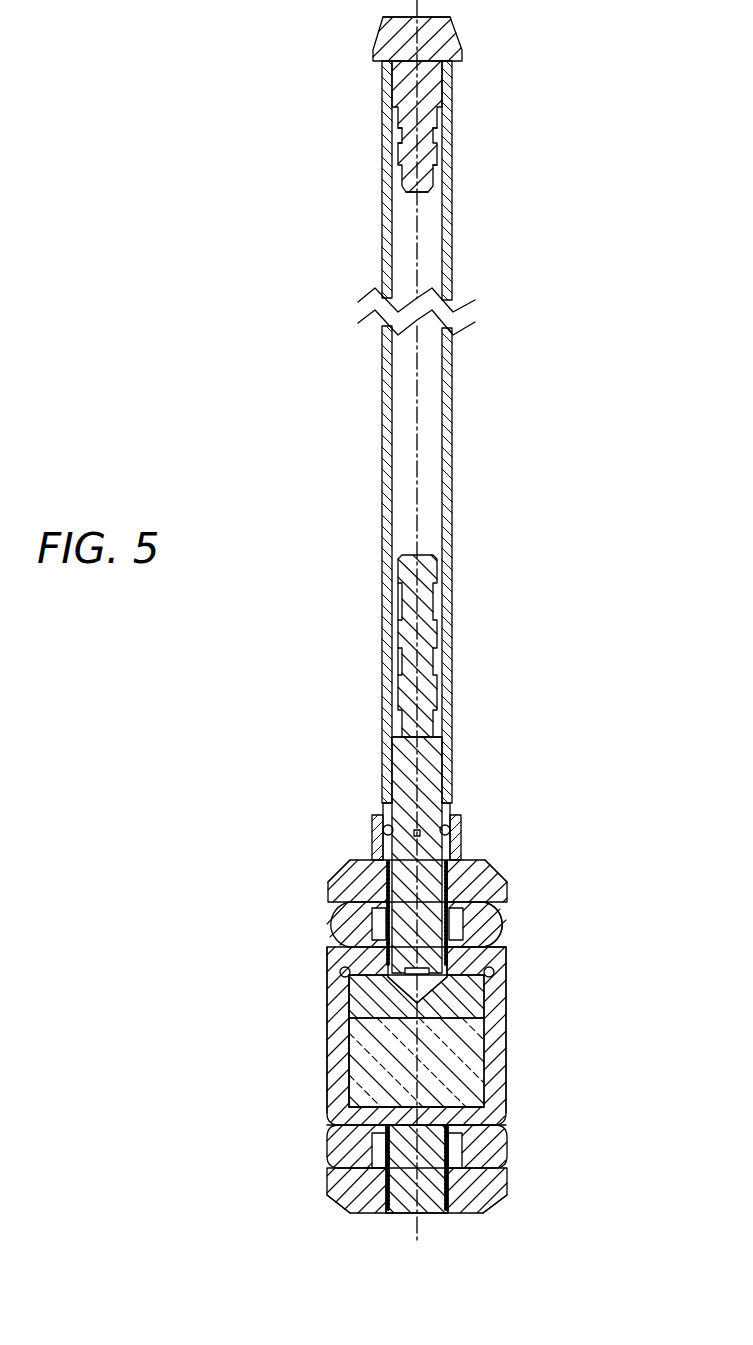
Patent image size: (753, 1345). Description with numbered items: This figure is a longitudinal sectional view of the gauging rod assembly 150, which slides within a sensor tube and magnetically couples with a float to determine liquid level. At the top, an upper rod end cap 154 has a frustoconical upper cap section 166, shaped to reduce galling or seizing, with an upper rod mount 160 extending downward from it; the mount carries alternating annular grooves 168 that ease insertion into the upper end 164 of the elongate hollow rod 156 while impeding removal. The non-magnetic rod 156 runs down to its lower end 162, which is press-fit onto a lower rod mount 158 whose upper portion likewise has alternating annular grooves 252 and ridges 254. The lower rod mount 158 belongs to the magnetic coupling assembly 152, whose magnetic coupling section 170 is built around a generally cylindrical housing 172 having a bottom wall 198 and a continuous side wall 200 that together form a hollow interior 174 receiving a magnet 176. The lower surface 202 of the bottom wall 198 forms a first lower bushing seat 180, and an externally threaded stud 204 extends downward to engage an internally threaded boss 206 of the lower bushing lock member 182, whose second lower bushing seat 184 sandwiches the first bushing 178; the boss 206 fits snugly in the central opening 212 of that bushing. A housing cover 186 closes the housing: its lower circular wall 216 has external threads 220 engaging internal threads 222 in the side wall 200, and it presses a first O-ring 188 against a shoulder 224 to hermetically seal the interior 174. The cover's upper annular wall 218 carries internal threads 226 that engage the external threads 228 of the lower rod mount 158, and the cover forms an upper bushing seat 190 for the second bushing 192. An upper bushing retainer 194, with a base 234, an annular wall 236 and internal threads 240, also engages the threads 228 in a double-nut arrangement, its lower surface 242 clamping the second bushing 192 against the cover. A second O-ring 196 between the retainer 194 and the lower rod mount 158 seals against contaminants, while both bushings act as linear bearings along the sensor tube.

The gauging rod assembly 150 is at (556, 395).
The magnetic coupling assembly 152 is at (275, 1012).
The upper rod end cap 154 is at (461, 36).
The rod 156 is at (453, 263).
The lower rod mount 158 is at (440, 745).
The upper rod mount 160 is at (482, 179).
The lower end 162 is at (452, 785).
The upper end 164 is at (453, 75).
The upper cap section 166 is at (386, 33).
The annular grooves 168 is at (397, 118).
The magnetic coupling section 170 is at (434, 128).
The housing 172 is at (333, 1032).
The hollow interior 174 is at (328, 1035).
The magnet 176 is at (367, 1032).
The first bushing 178 is at (493, 1145).
The first lower bushing seat 180 is at (348, 1138).
The lower bushing lock member 182 is at (486, 1198).
The second lower bushing seat 184 is at (286, 1206).
The housing cover 186 is at (506, 957).
The first O-ring 188 is at (345, 965).
The upper bushing seat 190 is at (333, 930).
The second bushing 192 is at (508, 940).
The upper bushing retainer 194 is at (455, 850).
The second O-ring 196 is at (462, 818).
The bottom wall 198 is at (460, 1115).
The continuous side wall 200 is at (506, 1062).
The lower surface 202 is at (354, 1156).
The externally threaded stud 204 is at (441, 1195).
The internally threaded boss 206 is at (498, 1185).
The central opening 212 is at (362, 1165).
The lower circular wall 216 is at (506, 1032).
The upper annular wall 218 is at (508, 925).
The external threads 220 is at (470, 1012).
The internal threads 222 is at (352, 995).
The shoulder 224 is at (470, 992).
The internal threads 226 is at (350, 905).
The external threads 228 is at (355, 865).
The base 234 is at (378, 862).
The annular wall 236 is at (373, 825).
The internal threads 240 is at (448, 840).
The lower surface 242 is at (505, 906).
The annular grooves 252 is at (399, 698).
The ridges 254 is at (438, 683).